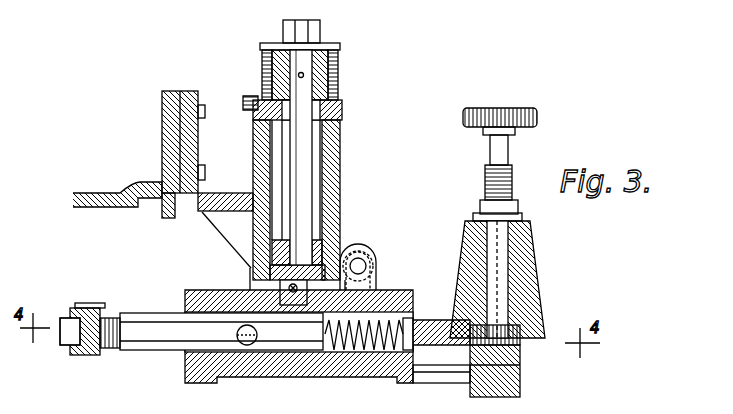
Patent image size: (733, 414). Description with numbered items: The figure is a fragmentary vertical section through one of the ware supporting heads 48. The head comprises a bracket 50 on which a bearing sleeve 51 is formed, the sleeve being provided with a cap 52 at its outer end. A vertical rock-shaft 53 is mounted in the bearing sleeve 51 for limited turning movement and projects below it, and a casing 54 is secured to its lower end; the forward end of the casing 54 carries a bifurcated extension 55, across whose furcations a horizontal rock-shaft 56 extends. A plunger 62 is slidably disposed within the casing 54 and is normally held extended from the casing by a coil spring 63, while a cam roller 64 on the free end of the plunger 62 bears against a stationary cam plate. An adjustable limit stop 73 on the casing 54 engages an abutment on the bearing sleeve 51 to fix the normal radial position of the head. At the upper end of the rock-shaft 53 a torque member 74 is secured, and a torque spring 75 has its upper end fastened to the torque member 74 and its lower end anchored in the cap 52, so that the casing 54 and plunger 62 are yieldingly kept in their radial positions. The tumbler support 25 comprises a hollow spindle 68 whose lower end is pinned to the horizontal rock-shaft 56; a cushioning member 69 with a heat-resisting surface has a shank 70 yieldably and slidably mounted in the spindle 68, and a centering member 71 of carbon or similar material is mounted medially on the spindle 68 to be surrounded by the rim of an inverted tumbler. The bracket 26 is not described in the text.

The tumbler support 25 is at (520, 254).
The bracket 26 is at (162, 92).
The head 48 is at (377, 222).
The bracket 50 is at (243, 102).
The bearing sleeve 51 is at (337, 167).
The cap 52 is at (342, 107).
The rock-shaft 53 is at (298, 193).
The casing 54 is at (290, 377).
The bifurcated extension 55 is at (432, 383).
The horizontal rock-shaft 56 is at (520, 378).
The plunger 62 is at (152, 318).
The coil spring 63 is at (388, 328).
The cam roller 64 is at (75, 330).
The hollow spindle 68 is at (512, 185).
The cushioning member 69 is at (530, 121).
The shank 70 is at (500, 158).
The centering member 71 is at (528, 300).
The adjustable limit stop 73 is at (358, 266).
The torque member 74 is at (320, 67).
The torque spring 75 is at (330, 95).